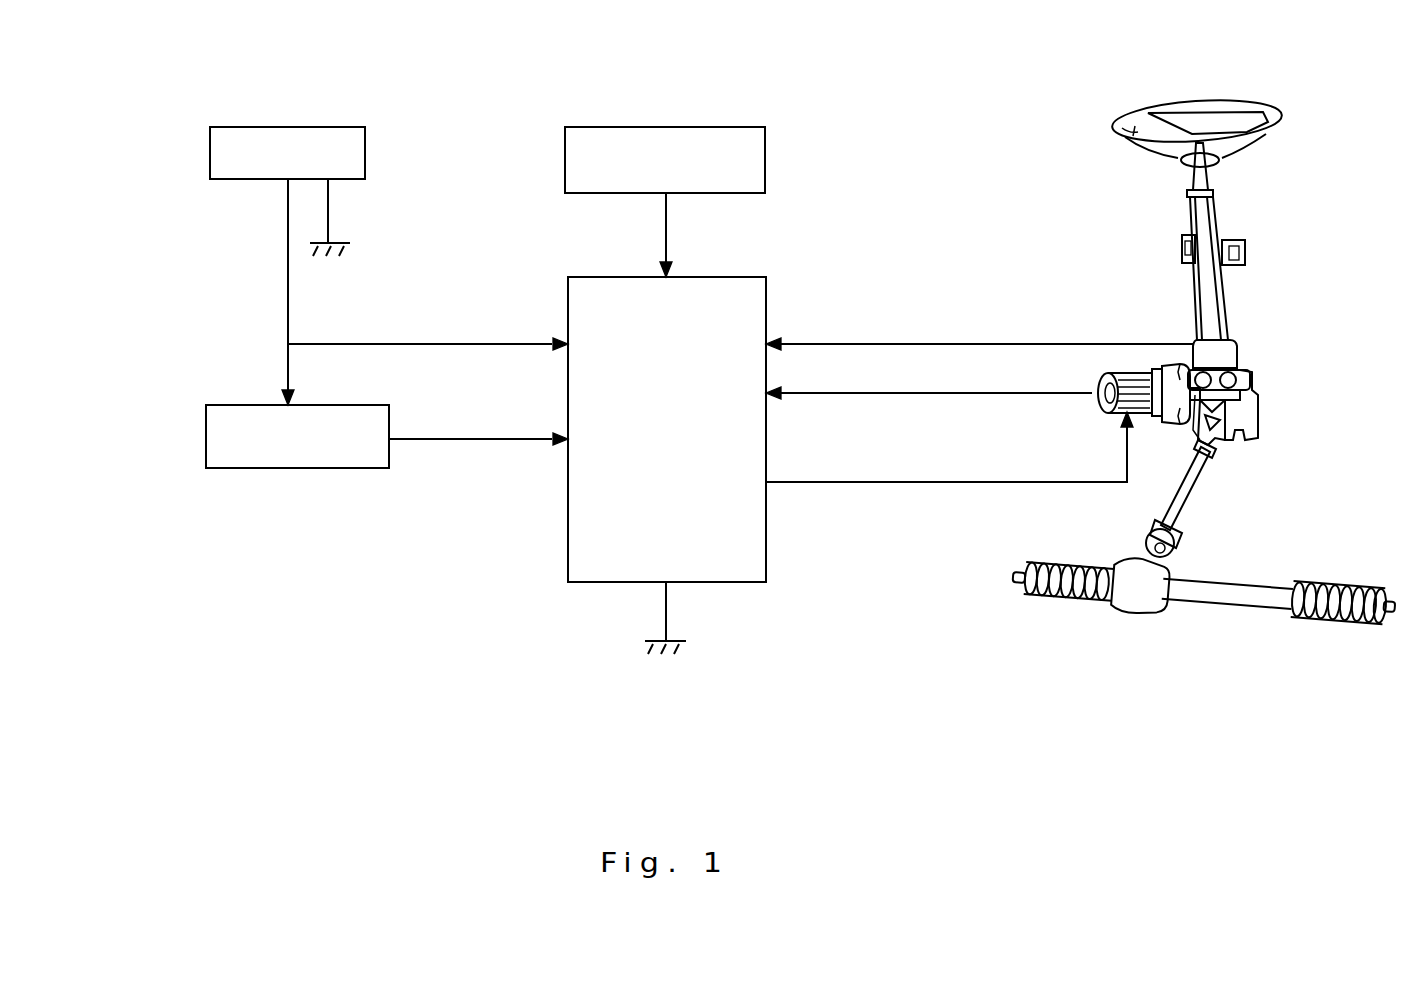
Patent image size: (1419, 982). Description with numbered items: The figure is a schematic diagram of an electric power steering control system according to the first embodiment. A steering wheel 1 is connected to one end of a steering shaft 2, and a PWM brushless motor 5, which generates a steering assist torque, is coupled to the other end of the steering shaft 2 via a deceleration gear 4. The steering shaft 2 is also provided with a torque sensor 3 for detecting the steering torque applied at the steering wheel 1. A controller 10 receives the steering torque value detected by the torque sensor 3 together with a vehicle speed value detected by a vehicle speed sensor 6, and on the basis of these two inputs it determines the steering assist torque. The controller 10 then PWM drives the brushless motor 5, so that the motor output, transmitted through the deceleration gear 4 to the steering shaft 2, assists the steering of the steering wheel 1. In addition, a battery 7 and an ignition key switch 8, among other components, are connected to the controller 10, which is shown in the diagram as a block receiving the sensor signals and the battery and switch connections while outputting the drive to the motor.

The steering wheel 1 is at (1215, 100).
The steering shaft 2 is at (1228, 300).
The torque sensor 3 is at (1240, 358).
The deceleration gear 4 is at (1245, 393).
The PWM brushless motor 5 is at (1128, 372).
The vehicle speed sensor 6 is at (715, 127).
The battery 7 is at (328, 127).
The ignition key switch 8 is at (318, 470).
The controller 10 is at (748, 277).